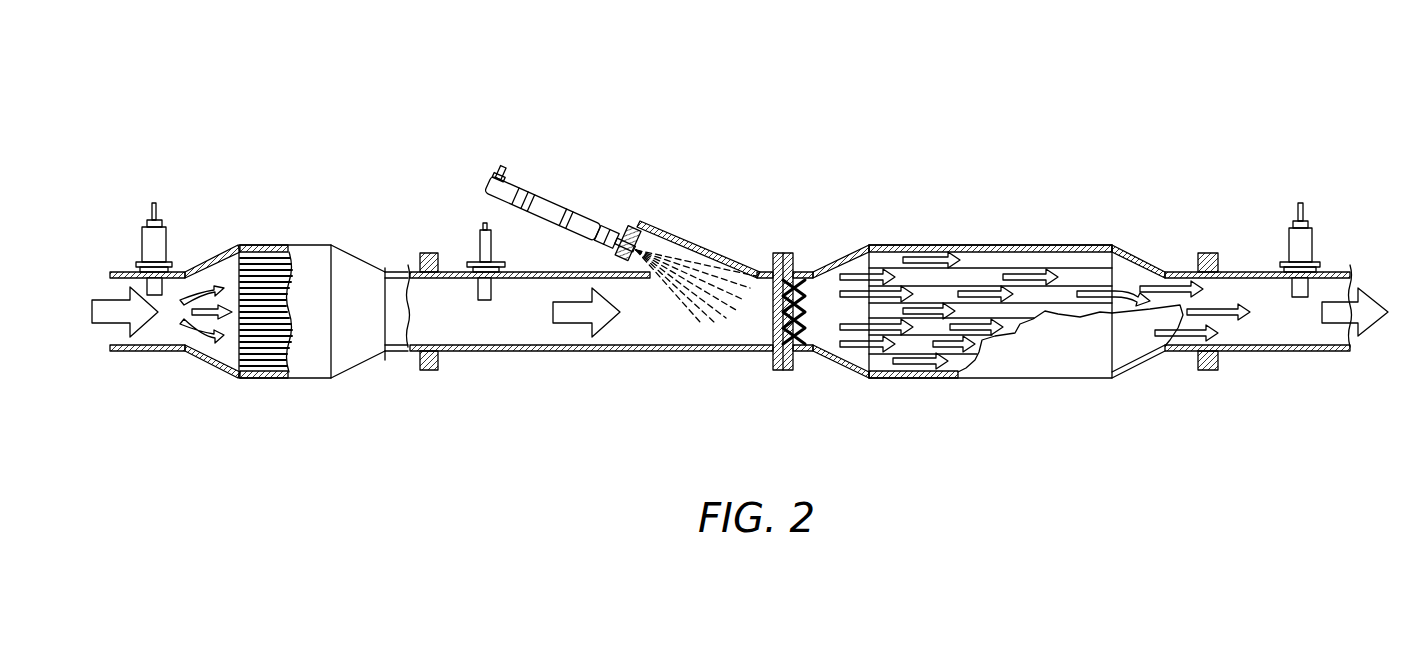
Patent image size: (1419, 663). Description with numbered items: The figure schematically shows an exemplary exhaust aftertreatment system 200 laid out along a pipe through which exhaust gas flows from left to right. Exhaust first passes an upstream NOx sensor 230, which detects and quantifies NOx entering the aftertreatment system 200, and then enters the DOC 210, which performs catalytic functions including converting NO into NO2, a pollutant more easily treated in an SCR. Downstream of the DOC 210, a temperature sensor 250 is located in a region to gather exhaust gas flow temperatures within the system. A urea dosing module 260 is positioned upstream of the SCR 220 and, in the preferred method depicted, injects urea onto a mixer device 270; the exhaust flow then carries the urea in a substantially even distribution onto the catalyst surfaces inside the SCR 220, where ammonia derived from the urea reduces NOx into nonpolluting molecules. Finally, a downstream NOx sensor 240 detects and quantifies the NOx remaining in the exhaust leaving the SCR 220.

The aftertreatment system 200 is at (211, 127).
The DOC 210 is at (307, 258).
The SCR 220 is at (978, 280).
The upstream NOx sensor 230 is at (147, 243).
The downstream NOx sensor 240 is at (1304, 248).
The temperature sensor 250 is at (484, 246).
The urea dosing module 260 is at (576, 222).
The mixer device 270 is at (806, 305).